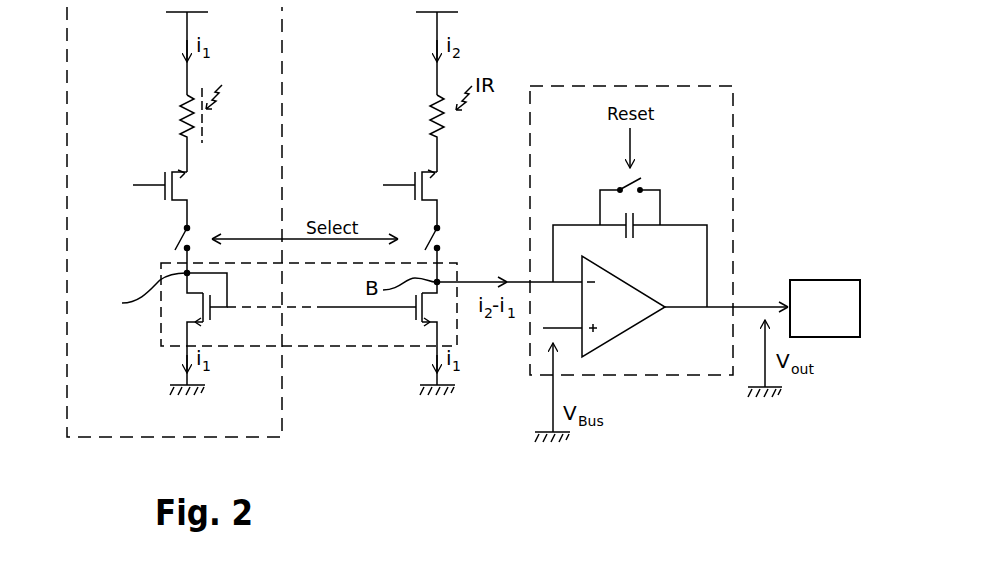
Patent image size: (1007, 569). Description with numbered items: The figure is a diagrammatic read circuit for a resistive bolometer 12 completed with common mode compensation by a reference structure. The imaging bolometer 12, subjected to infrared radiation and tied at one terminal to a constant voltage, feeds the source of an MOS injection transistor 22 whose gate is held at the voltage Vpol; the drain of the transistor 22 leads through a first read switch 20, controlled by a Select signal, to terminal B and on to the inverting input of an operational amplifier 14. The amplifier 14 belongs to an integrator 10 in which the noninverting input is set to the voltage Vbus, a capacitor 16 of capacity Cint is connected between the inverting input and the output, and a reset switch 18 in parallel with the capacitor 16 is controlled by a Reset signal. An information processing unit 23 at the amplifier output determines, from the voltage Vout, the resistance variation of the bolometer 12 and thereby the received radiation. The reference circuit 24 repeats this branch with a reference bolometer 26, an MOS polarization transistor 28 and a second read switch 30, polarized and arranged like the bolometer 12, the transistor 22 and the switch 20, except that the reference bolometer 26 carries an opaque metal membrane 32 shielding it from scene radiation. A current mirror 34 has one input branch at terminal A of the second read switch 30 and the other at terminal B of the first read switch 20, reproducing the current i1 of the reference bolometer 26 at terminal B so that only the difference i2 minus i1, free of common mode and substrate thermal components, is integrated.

The integrator 10 is at (733, 133).
The resistive bolometer 12 is at (420, 113).
The operational amplifier 14 is at (630, 331).
The capacitor 16 is at (636, 234).
The reset switch 18 is at (645, 183).
The first read switch 20 is at (443, 241).
The MOS injection transistor 22 is at (433, 186).
The information processing unit 23 is at (825, 308).
The reference circuit 24 is at (283, 395).
The reference bolometer 26 is at (172, 112).
The MOS polarization transistor 28 is at (184, 186).
The second read switch 30 is at (182, 236).
The opaque metal membrane 32 is at (203, 122).
The current mirror 34 is at (365, 348).